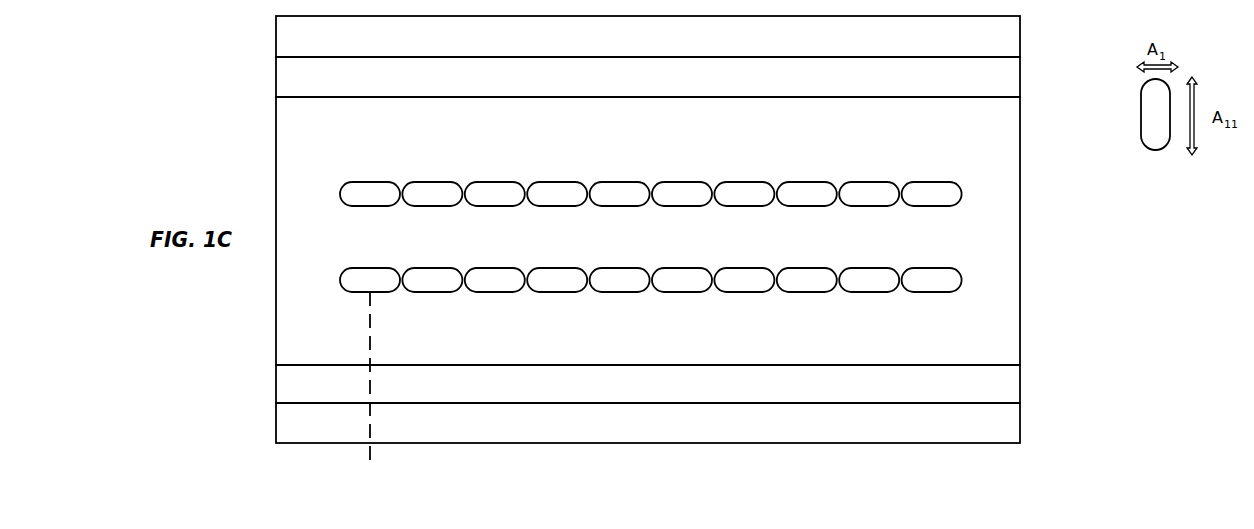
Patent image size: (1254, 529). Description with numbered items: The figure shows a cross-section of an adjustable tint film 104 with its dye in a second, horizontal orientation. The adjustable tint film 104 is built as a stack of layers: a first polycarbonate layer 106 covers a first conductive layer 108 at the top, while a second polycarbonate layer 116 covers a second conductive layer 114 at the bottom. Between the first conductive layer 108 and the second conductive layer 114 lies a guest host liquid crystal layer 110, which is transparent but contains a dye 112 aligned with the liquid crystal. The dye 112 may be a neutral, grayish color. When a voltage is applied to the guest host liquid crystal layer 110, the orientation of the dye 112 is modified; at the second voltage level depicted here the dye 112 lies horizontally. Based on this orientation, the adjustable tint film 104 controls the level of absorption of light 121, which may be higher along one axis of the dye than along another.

The adjustable tint film 104 is at (157, 67).
The first polycarbonate layer 106 is at (1020, 44).
The first conductive layer 108 is at (1020, 81).
The guest host liquid crystal layer 110 is at (1020, 137).
The dye 112 is at (962, 278).
The second conductive layer 114 is at (1020, 390).
The second polycarbonate layer 116 is at (1020, 433).
The light 121 is at (370, 323).